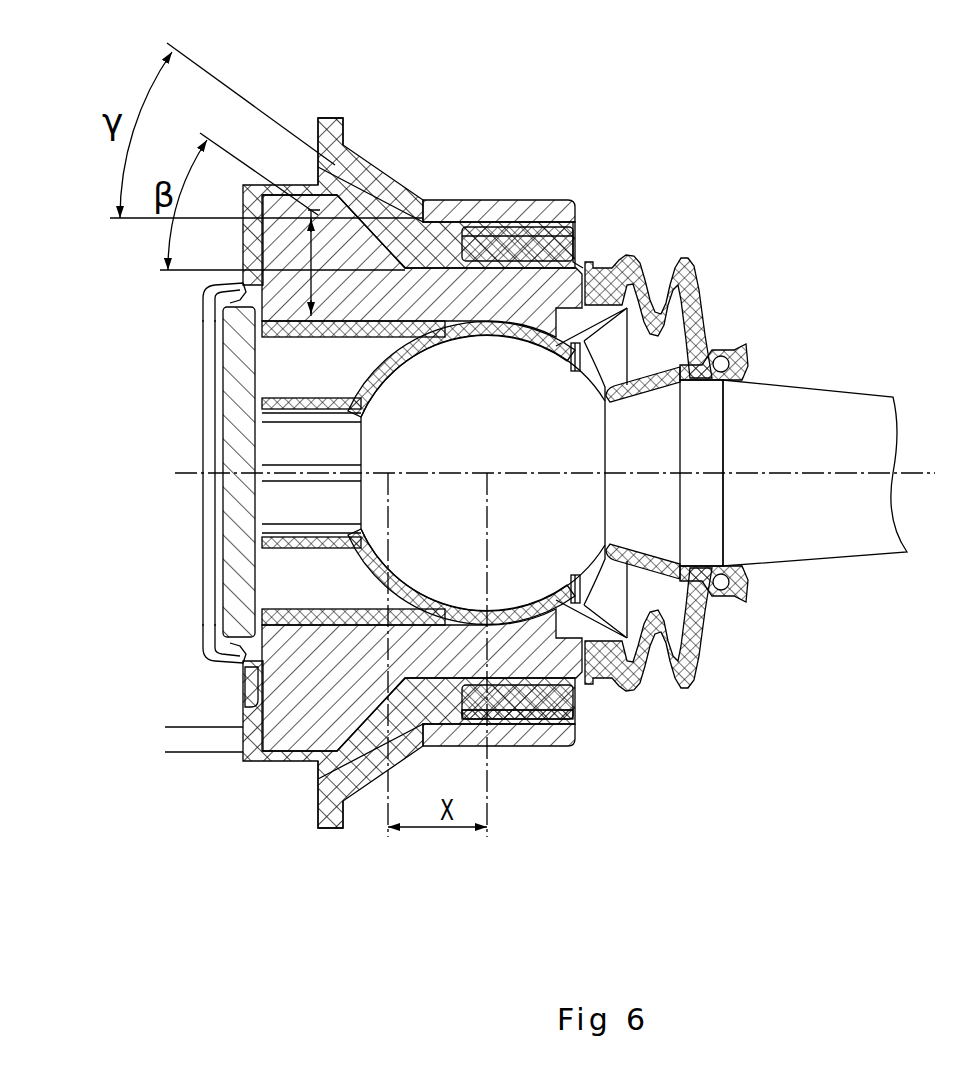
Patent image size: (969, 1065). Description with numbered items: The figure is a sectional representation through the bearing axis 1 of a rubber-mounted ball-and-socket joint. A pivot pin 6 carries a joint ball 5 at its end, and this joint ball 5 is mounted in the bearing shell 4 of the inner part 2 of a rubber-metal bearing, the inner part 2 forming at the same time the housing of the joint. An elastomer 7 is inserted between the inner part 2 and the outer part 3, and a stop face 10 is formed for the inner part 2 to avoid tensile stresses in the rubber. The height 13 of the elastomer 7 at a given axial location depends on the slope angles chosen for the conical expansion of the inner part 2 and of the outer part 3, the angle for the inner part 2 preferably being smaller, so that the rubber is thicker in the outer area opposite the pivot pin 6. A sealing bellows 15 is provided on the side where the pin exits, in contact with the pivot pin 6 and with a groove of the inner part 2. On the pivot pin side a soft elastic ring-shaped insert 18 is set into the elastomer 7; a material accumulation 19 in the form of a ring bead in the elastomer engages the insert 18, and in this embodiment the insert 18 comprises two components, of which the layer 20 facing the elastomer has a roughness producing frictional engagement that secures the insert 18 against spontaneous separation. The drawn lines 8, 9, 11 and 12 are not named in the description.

The bearing axis 1 is at (857, 473).
The inner part 2 is at (542, 295).
The outer part 3 is at (338, 154).
The bearing shell 4 is at (512, 617).
The joint ball 5 is at (527, 540).
The pivot pin 6 is at (793, 430).
The elastomer 7 is at (417, 242).
The pivot point 8 is at (388, 473).
The ball center 9 is at (487, 473).
The stop face 10 is at (240, 705).
The lower sheet edge 11 is at (188, 754).
The upper sheet edge 12 is at (192, 727).
The height of the elastomer 13 is at (307, 256).
The sealing bellows 15 is at (690, 327).
The insert 18 is at (487, 242).
The material accumulation 19 is at (553, 265).
The layer 20 is at (560, 715).